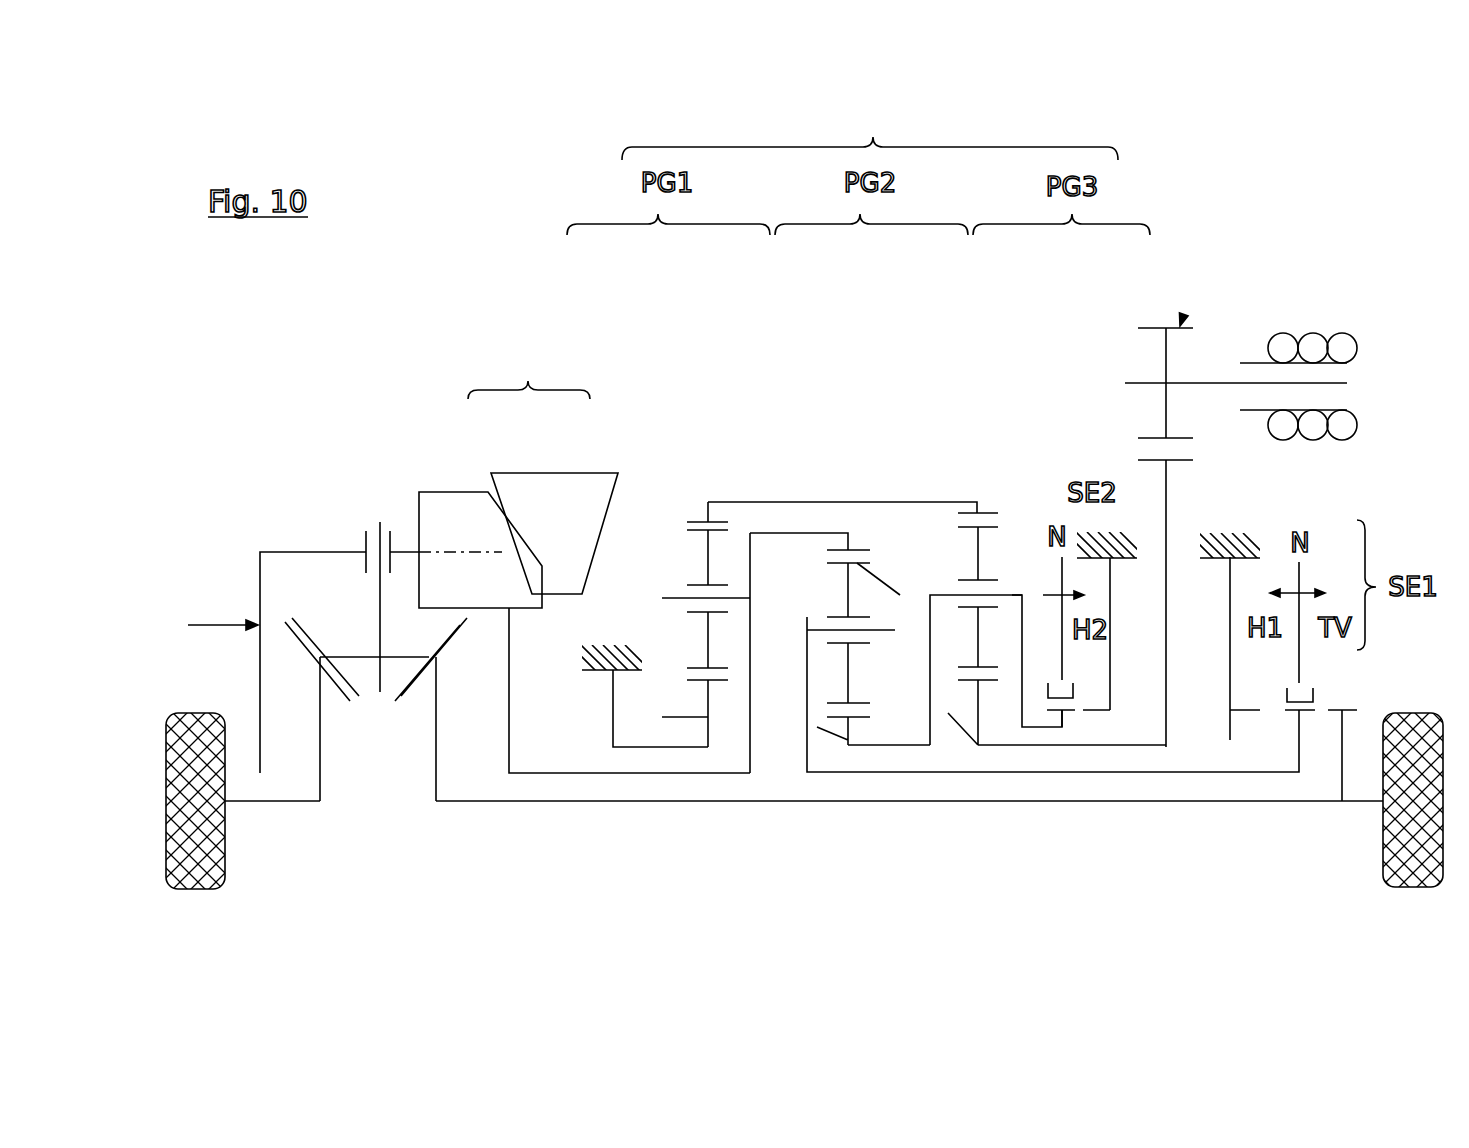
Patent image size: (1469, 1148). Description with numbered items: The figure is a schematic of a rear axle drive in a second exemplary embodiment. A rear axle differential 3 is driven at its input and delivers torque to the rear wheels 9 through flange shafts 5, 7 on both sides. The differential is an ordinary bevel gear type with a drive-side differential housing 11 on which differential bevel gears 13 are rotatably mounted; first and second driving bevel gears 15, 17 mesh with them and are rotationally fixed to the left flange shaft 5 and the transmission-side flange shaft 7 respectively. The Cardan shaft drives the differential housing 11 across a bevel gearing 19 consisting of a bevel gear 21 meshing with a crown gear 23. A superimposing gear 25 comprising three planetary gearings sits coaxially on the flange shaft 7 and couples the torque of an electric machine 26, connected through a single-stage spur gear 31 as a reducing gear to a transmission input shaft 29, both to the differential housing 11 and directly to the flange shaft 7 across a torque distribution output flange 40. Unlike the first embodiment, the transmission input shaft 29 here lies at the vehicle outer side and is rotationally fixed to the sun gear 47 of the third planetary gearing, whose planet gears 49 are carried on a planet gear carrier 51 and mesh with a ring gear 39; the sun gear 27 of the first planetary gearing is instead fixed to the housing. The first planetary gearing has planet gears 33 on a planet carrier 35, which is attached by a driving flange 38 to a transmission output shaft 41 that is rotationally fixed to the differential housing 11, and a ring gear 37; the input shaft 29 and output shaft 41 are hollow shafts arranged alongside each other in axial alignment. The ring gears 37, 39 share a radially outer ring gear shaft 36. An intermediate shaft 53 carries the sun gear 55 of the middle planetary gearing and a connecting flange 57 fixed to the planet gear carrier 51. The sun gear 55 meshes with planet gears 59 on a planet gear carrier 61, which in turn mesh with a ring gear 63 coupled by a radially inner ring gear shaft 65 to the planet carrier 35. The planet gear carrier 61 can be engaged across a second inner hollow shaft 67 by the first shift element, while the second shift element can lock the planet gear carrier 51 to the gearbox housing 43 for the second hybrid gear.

The rear axle differential 3 is at (210, 625).
The flange shaft 5 is at (259, 801).
The flange shaft 7 is at (1230, 802).
The rear wheels 9 is at (168, 714).
The differential housing 11 is at (258, 563).
The differential bevel gears 13 is at (380, 692).
The first driving bevel gear 15 is at (322, 778).
The second driving bevel gear 17 is at (434, 778).
The bevel gearing 19 is at (529, 373).
The bevel gear 21 is at (567, 471).
The crown gear 23 is at (443, 490).
The superimposing gear 25 is at (870, 131).
The electric machine 26 is at (1357, 348).
The sun gear 27 is at (662, 717).
The transmission input shaft 29 is at (1142, 745).
The single-stage spur gear 31 is at (1182, 320).
The planet gears 33 is at (717, 522).
The planet carrier 35 is at (662, 598).
The radially outer ring gear shaft 36 is at (945, 502).
The ring gear 37 is at (695, 522).
The driving flange 38 is at (750, 730).
The ring gear 39 is at (993, 513).
The torque distribution output flange 40 is at (1342, 773).
The transmission output shaft 41 is at (531, 776).
The gearbox housing 43 is at (1253, 540).
The sun gear 47 is at (948, 713).
The planet gears 49 is at (981, 526).
The planet gear carrier 51 is at (1012, 595).
The intermediate shaft 53 is at (890, 747).
The sun gear 55 is at (817, 727).
The connecting flange 57 is at (932, 725).
The planet gears 59 is at (900, 595).
The planet gear carrier 61 is at (822, 627).
The ring gear 63 is at (863, 548).
The radially inner ring gear shaft 65 is at (835, 533).
The second inner hollow shaft 67 is at (1080, 772).